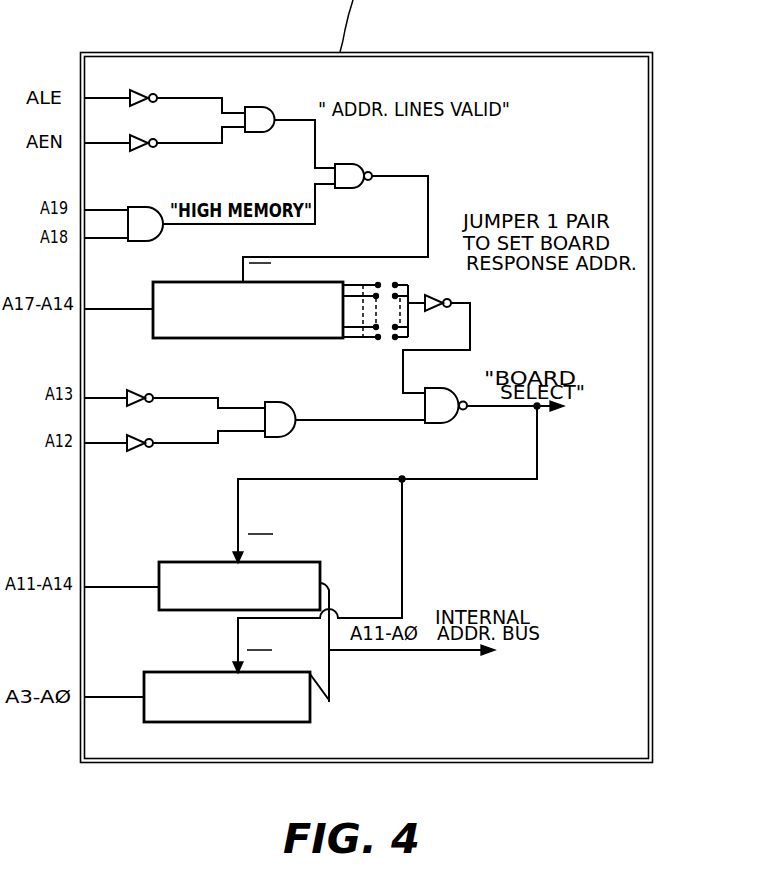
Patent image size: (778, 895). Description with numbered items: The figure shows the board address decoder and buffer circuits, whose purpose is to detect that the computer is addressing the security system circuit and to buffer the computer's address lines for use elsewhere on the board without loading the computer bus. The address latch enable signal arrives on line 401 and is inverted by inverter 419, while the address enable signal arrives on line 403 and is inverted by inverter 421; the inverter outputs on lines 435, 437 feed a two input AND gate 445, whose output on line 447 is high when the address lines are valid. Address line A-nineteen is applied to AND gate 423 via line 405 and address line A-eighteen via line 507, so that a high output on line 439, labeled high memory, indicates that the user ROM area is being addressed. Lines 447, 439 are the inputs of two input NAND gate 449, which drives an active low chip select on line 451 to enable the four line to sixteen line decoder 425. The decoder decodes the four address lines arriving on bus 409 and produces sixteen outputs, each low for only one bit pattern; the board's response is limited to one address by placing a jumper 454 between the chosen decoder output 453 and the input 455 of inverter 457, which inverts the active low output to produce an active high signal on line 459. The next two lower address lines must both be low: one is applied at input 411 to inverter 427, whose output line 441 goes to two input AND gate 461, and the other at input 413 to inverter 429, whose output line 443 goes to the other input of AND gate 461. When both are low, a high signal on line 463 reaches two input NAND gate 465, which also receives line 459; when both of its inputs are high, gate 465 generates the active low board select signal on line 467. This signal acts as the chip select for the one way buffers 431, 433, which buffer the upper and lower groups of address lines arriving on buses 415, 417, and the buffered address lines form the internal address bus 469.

The line 401 is at (106, 97).
The line 403 is at (106, 143).
The line 405 is at (103, 208).
The A18 input line 507 is at (88, 238).
The bus 409 is at (108, 308).
The input 411 is at (100, 397).
The input 413 is at (100, 444).
The bus 415 is at (107, 586).
The bus 417 is at (107, 696).
The inverter 419 is at (146, 90).
The inverter 421 is at (145, 135).
The AND gate 423 is at (145, 207).
The four line to sixteen line decoder 425 is at (192, 282).
The inverter 427 is at (143, 390).
The inverter 429 is at (136, 441).
The one way buffer 431 is at (195, 561).
The one way buffer 433 is at (188, 672).
The inverted ALE line 435 is at (209, 98).
The line 437 is at (202, 143).
The line 439 is at (226, 206).
The line 441 is at (208, 397).
The line 443 is at (190, 444).
The two input AND gate 445 is at (268, 106).
The line 447 is at (317, 146).
The two input NAND gate 449 is at (358, 164).
The line 451 is at (429, 202).
The output 453 is at (365, 338).
The jumper 454 is at (440, 262).
The input 455 is at (416, 304).
The inverter 457 is at (449, 297).
The line 459 is at (472, 336).
The two input AND gate 461 is at (294, 404).
The line 463 is at (348, 418).
The two input NAND gate 465 is at (445, 425).
The line 467 is at (538, 457).
The internal address bus 469 is at (418, 652).